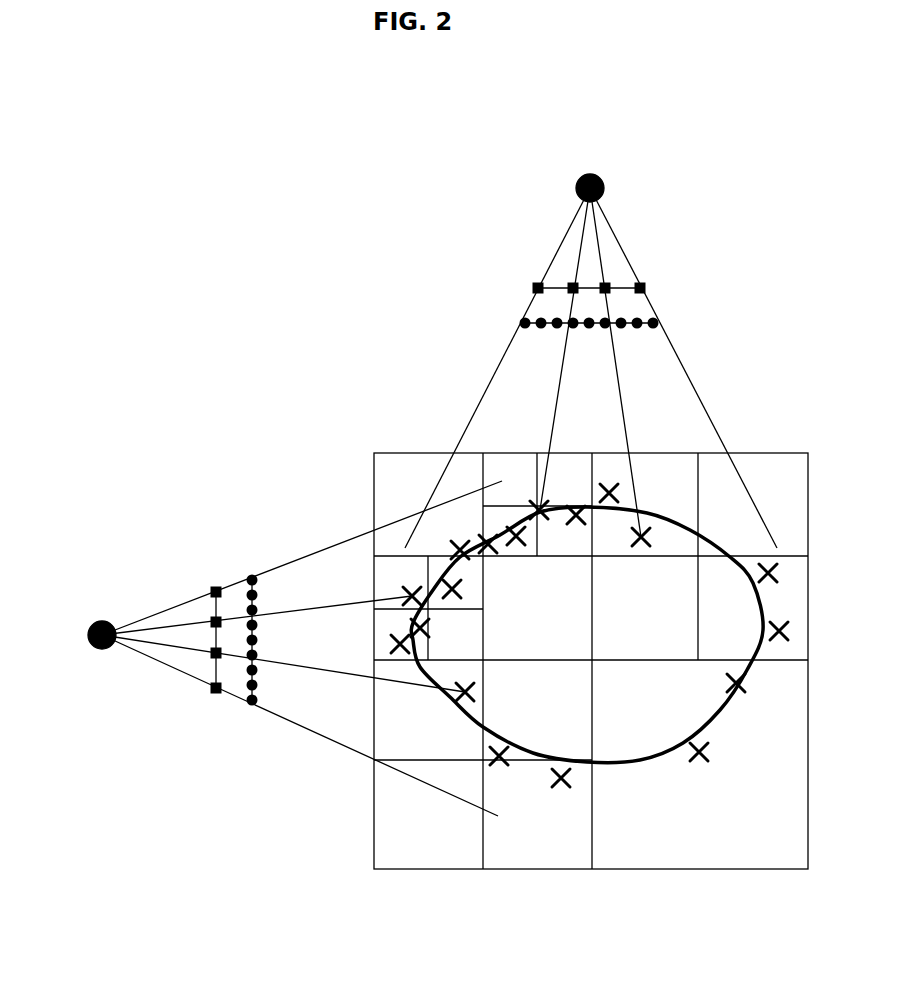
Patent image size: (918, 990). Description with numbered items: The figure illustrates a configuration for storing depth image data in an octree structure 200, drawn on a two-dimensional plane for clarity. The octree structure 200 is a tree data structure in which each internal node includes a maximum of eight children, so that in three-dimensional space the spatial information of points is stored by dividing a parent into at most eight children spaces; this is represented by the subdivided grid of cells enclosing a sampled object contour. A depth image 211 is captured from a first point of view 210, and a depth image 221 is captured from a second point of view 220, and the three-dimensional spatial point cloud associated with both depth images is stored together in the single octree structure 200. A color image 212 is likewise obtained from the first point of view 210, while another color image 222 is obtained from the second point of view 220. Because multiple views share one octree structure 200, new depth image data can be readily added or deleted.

The octree structure 200 is at (408, 452).
The first point of view 210 is at (602, 175).
The depth image 211 is at (645, 288).
The color image 212 is at (658, 323).
The second point of view 220 is at (93, 623).
The depth image 221 is at (216, 588).
The color image 222 is at (252, 576).